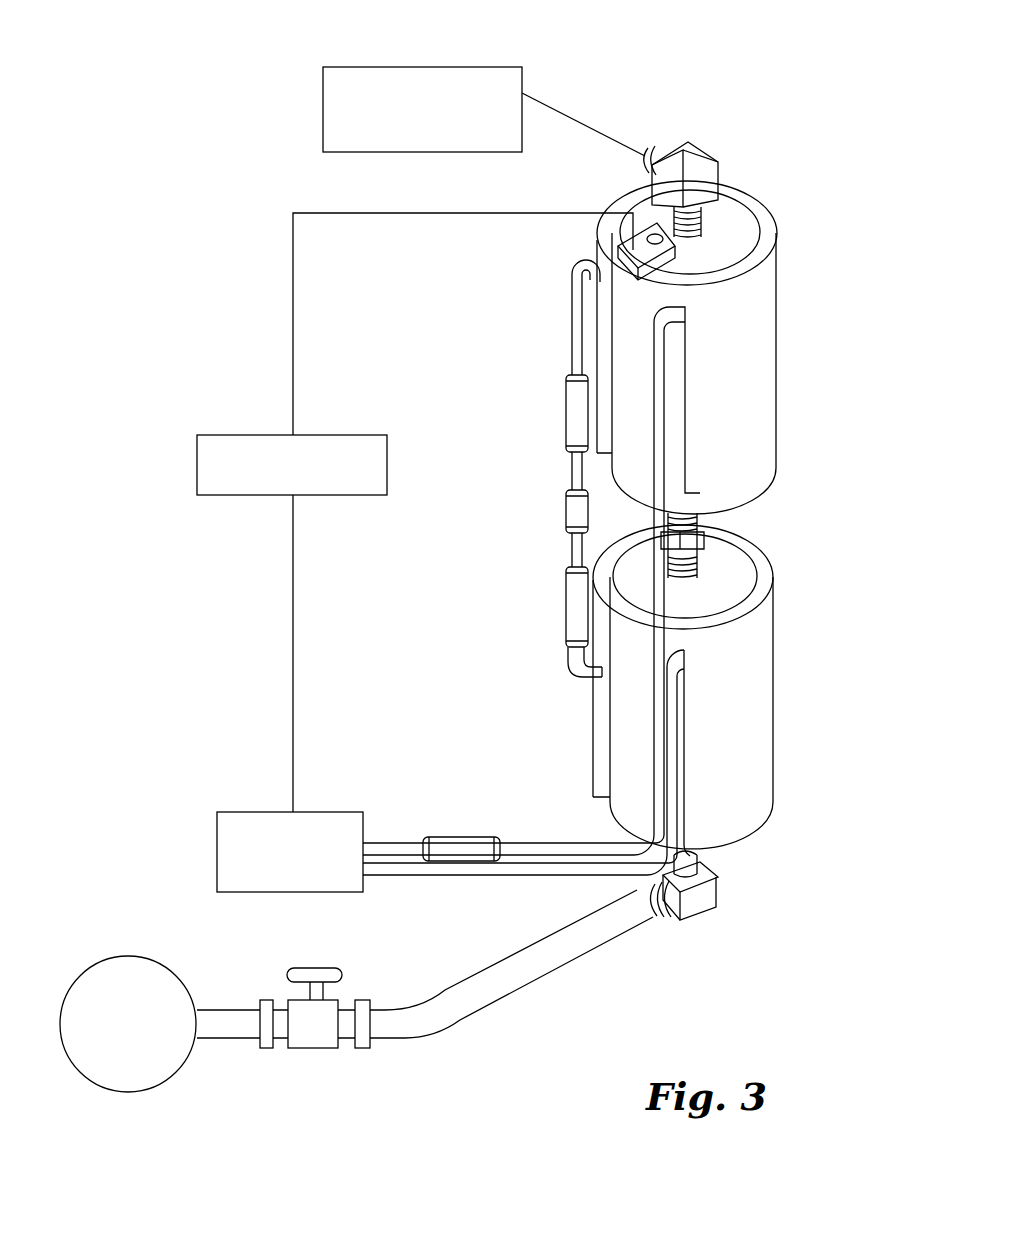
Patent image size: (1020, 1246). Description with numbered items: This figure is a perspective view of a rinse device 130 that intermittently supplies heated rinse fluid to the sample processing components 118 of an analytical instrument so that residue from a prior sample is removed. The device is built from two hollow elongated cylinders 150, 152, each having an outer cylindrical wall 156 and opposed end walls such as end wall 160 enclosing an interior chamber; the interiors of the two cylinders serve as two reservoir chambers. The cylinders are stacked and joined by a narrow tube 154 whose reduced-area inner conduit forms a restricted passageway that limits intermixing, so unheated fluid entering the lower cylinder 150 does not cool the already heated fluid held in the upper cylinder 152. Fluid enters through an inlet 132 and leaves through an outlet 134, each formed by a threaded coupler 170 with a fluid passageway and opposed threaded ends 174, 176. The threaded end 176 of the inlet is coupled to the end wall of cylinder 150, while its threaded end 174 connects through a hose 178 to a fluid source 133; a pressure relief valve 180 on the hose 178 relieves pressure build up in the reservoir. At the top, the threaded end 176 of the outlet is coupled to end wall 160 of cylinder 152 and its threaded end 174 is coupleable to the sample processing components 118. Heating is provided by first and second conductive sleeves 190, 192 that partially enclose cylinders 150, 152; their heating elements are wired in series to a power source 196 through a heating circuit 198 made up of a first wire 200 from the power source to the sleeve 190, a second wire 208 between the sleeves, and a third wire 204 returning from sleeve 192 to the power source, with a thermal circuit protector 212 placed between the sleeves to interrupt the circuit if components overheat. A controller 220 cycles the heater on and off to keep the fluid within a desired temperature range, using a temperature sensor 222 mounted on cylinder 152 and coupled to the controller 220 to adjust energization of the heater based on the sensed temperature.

The sample processing components 118 is at (363, 60).
The rinse device 130 is at (778, 117).
The inlet 132 is at (770, 895).
The fluid source 133 is at (92, 960).
The outlet 134 is at (677, 141).
The hollow elongated cylinder 150 is at (726, 687).
The hollow elongated cylinder 152 is at (785, 258).
The narrow tube 154 is at (712, 540).
The outer cylindrical wall 156 is at (638, 353).
The end wall 160 is at (748, 241).
The threaded coupler 170 is at (692, 142).
The threaded end 174 is at (650, 150).
The threaded end 176 is at (718, 210).
The hose 178 is at (432, 1020).
The pressure relief valve 180 is at (368, 994).
The first conductive sleeve 190 is at (750, 712).
The second conductive sleeve 192 is at (760, 334).
The power source 196 is at (334, 810).
The heating circuit 198 is at (513, 805).
The first wire 200 is at (514, 870).
The third wire 204 is at (660, 440).
The second wire 208 is at (578, 472).
The thermal circuit protector 212 is at (566, 518).
The controller 220 is at (335, 502).
The temperature sensor 222 is at (620, 240).